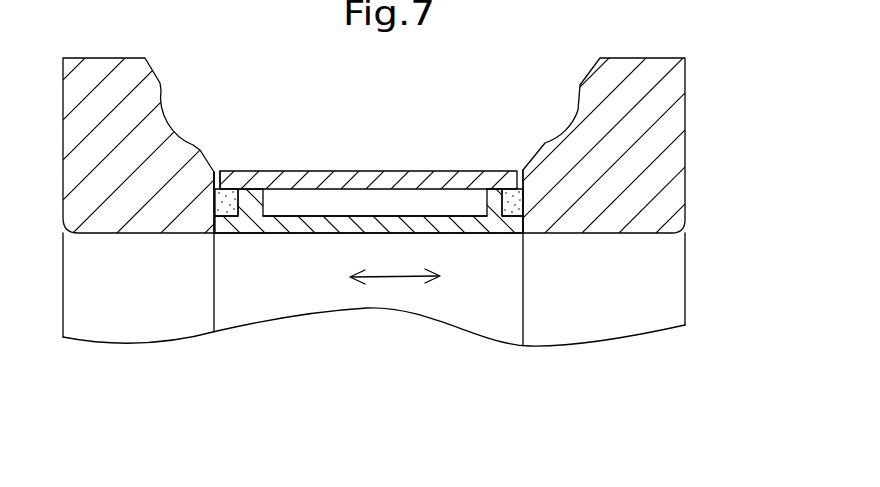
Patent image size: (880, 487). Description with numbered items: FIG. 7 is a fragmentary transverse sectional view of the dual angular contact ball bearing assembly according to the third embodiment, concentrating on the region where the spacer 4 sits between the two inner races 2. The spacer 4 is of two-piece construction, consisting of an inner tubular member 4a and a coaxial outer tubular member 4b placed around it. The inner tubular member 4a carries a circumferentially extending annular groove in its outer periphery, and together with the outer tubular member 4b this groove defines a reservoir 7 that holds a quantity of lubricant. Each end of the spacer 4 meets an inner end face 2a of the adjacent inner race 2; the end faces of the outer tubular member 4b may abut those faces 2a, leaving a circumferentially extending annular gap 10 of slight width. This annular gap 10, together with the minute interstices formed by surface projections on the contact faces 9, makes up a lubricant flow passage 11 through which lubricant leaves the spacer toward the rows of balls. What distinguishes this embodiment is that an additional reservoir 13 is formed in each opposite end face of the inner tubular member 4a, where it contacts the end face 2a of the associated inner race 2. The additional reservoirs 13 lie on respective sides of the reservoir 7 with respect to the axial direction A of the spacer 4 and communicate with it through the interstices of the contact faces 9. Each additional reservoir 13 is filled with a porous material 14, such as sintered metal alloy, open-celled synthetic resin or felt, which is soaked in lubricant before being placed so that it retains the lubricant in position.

The inner race 2 is at (73, 137).
The inner end face of inner race 2a is at (238, 232).
The spacer 4 is at (368, 163).
The inner tubular member 4a is at (365, 217).
The outer tubular member 4b is at (358, 171).
The reservoir 7 is at (307, 208).
The contact face 9 is at (251, 150).
The annular gap 10 is at (217, 171).
The lubricant flow passage 11 is at (272, 125).
The additional reservoir 13 is at (205, 218).
The porous material 14 is at (216, 203).
The axial direction A is at (395, 279).